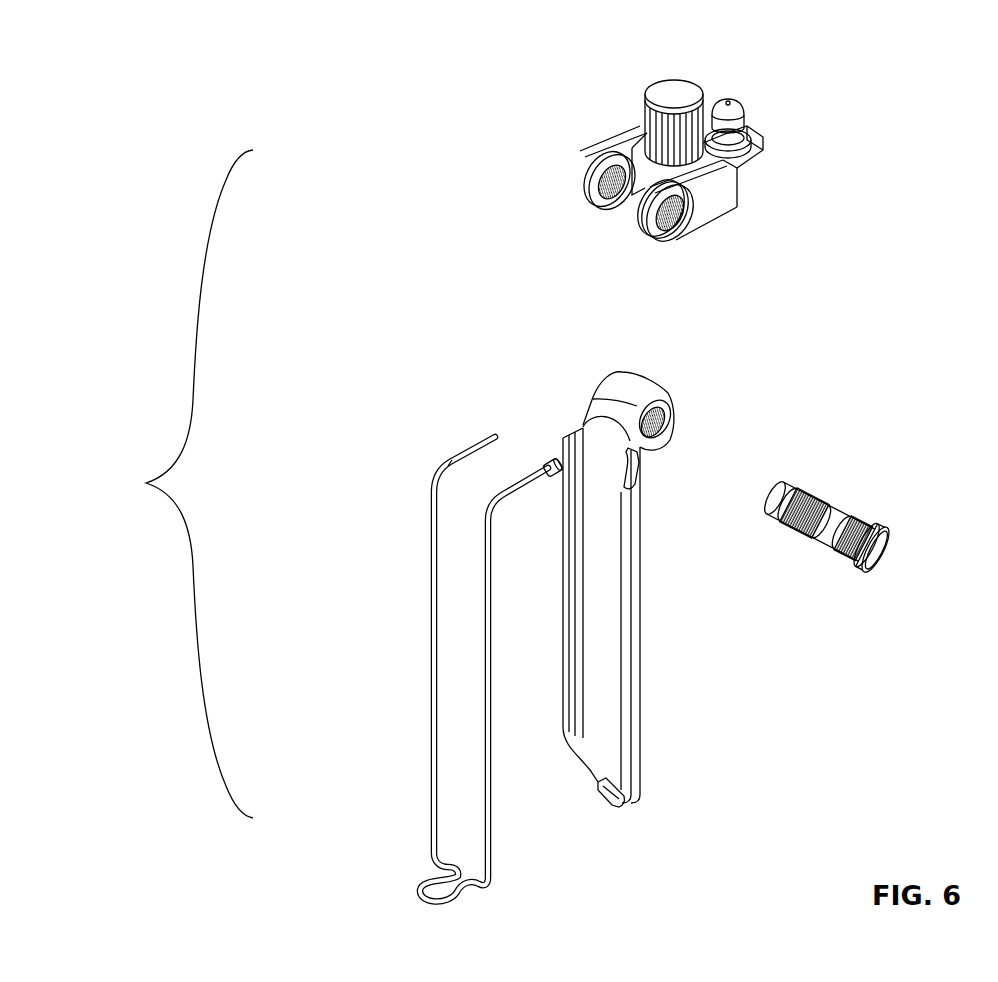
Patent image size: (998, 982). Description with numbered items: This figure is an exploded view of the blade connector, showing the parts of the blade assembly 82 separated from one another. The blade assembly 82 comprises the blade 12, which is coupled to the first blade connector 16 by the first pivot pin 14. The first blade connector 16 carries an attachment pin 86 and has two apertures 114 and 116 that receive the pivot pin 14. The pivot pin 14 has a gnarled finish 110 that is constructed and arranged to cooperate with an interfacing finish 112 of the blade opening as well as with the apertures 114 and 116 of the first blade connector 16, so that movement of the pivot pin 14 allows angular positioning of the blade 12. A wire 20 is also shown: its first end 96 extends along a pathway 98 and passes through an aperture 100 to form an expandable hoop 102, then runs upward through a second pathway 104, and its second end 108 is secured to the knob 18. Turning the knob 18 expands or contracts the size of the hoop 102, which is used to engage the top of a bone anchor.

The blade 12 is at (649, 610).
The first pivot pin 14 is at (862, 500).
The first blade connector 16 is at (649, 216).
The knob 18 is at (668, 91).
The wire 20 is at (464, 637).
The blade assembly 82 is at (146, 483).
The attachment pin 86 is at (738, 112).
The first end 96 is at (553, 462).
The pathway 98 is at (693, 233).
The aperture 100 is at (625, 805).
The expandable hoop 102 is at (418, 891).
The pathway 104 is at (563, 192).
The second end 108 is at (473, 440).
The gnarled finish 110 is at (795, 489).
The interfacing finish 112 is at (673, 406).
The aperture 114 is at (680, 228).
The aperture 116 is at (604, 205).